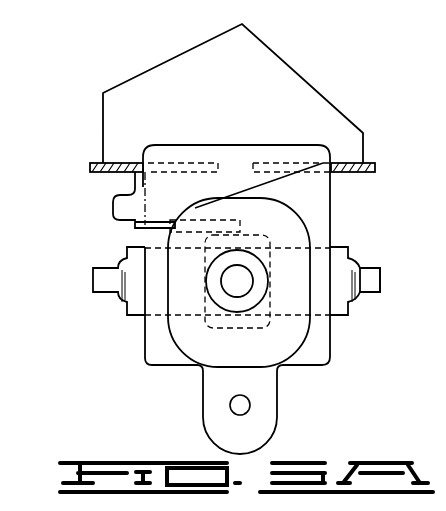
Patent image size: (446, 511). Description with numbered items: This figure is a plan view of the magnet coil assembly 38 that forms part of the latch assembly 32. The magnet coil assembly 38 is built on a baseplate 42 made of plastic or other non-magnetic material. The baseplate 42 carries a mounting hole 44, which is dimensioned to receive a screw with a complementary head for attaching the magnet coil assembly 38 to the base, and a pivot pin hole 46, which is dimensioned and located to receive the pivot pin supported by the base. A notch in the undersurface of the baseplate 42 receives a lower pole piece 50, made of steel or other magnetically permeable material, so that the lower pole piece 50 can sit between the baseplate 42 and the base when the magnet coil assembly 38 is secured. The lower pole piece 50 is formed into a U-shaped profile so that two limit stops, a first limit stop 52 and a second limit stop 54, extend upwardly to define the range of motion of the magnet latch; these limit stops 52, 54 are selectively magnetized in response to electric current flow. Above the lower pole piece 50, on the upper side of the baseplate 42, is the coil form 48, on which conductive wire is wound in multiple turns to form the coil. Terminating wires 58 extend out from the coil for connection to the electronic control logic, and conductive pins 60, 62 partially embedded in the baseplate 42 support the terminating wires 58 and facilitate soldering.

The latch assembly 32 is at (115, 240).
The magnet coil assembly 38 is at (331, 229).
The baseplate 42 is at (160, 348).
The mounting hole 44 is at (240, 290).
The pivot pin hole 46 is at (230, 405).
The coil form 48 is at (278, 224).
The lower pole piece 50 is at (349, 314).
The first limit stop 52 is at (380, 272).
The second limit stop 54 is at (97, 278).
The terminating wires 58 is at (242, 24).
The conductive pin 60 is at (371, 163).
The conductive pin 62 is at (98, 162).